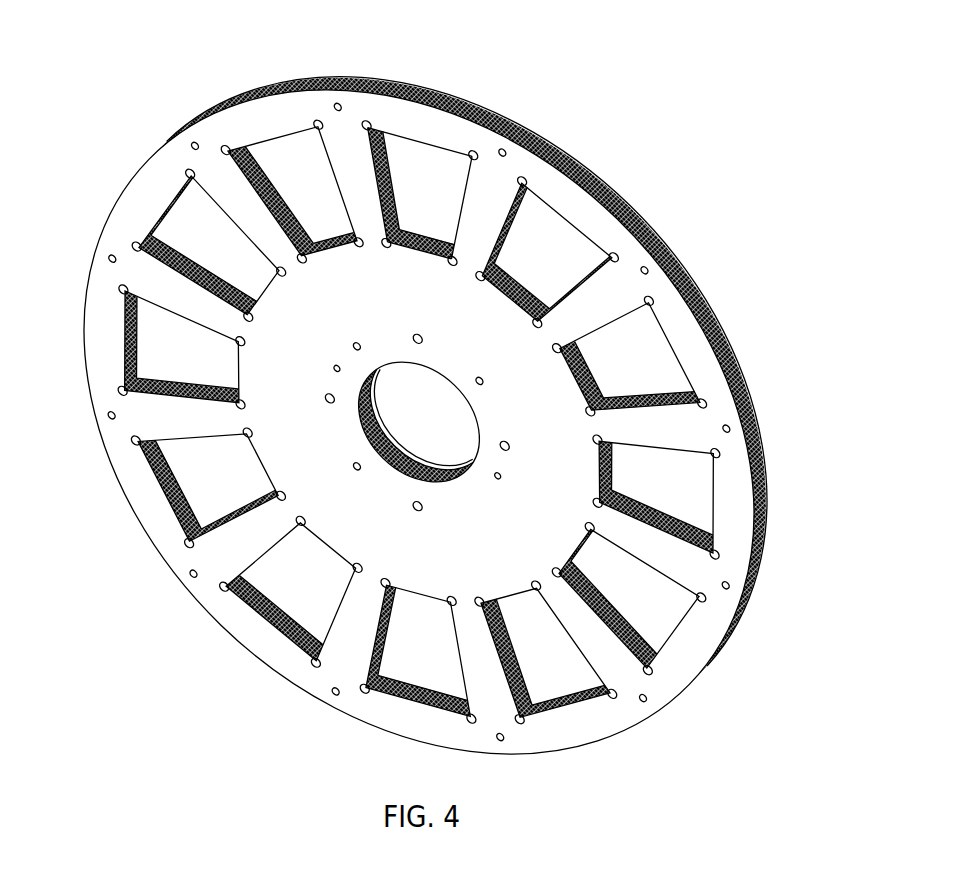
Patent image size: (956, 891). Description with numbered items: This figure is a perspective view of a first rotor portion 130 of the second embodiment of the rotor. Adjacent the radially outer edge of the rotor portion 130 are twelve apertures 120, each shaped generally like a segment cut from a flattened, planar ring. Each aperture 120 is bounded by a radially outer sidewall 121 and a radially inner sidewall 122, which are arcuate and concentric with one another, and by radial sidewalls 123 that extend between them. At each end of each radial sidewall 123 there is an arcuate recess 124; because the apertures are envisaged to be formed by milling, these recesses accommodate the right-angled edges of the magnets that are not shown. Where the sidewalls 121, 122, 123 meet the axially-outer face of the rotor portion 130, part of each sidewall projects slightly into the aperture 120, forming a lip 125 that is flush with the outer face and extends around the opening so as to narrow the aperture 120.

The aperture 120 is at (427, 156).
The radially outer sidewall 121 is at (418, 137).
The radially inner sidewall 122 is at (413, 246).
The radial sidewall 123 is at (380, 175).
The arcuate recess 124 is at (362, 127).
The lip 125 is at (395, 181).
The rotor portion 130 is at (638, 220).